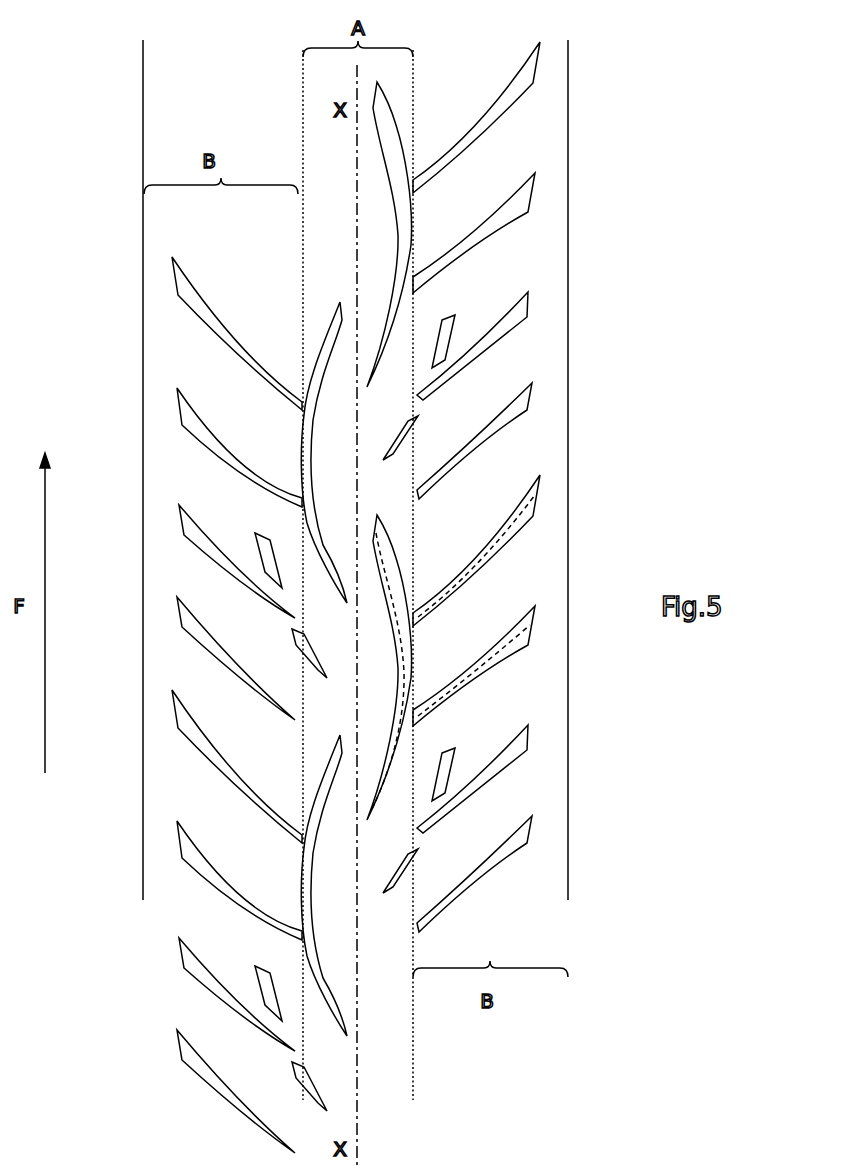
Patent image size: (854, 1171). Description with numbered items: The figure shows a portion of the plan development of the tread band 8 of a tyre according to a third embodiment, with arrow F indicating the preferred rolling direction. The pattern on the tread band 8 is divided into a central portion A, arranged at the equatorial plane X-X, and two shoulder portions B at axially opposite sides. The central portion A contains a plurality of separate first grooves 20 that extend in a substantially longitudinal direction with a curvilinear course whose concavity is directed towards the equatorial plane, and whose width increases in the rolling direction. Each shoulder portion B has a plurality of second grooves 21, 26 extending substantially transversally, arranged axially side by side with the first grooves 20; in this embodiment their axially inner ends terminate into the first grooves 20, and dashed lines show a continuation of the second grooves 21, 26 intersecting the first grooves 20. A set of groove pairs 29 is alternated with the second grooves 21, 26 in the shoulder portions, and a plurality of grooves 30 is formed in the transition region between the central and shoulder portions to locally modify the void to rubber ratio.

The tread band 8 is at (621, 184).
The first grooves 20 is at (390, 320).
The second grooves 21 is at (205, 307).
The second grooves 26 is at (480, 122).
The groove pairs 29 is at (207, 622).
The grooves 30 is at (265, 572).